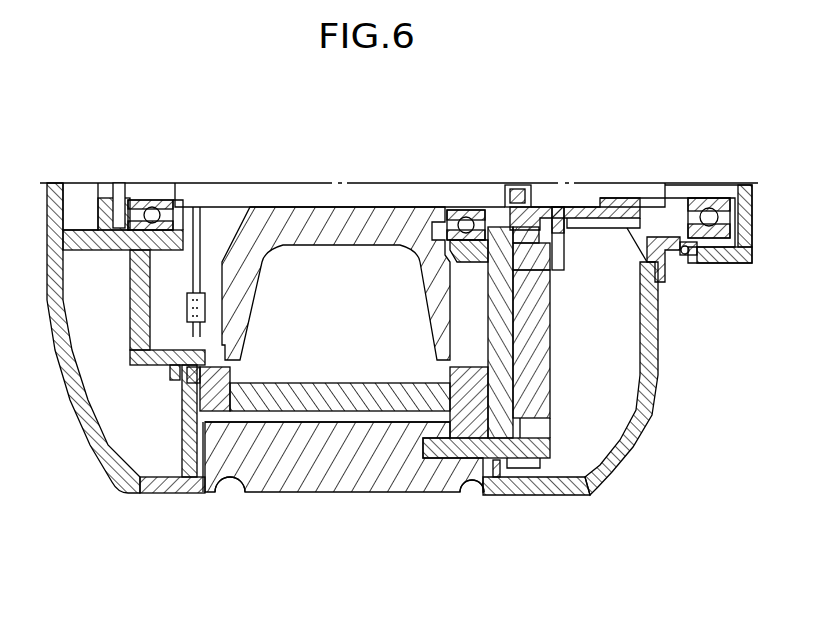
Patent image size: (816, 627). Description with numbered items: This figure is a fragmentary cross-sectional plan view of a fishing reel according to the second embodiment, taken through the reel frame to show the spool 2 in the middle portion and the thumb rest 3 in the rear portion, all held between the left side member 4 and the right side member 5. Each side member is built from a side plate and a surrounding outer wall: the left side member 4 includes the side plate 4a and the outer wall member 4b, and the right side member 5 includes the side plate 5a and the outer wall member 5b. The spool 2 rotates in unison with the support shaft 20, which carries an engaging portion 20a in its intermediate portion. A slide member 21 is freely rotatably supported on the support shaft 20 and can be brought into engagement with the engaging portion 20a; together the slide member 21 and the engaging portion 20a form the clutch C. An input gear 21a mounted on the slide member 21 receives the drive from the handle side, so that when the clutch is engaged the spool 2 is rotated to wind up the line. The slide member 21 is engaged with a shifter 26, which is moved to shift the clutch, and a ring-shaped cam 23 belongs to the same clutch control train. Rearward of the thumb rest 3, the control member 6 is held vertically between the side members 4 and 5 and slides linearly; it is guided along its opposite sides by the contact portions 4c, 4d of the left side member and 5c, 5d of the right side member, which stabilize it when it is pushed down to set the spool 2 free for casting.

The support shaft 20 is at (272, 181).
The engaging portion 20a is at (512, 185).
The slide member 21 is at (542, 183).
The input gear 21a is at (660, 280).
The shifter 26 is at (563, 232).
The ring-shaped cam 23 is at (550, 254).
The clutch C is at (498, 236).
The spool 2 is at (328, 245).
The thumb rest 3 is at (365, 383).
The control member 6 is at (348, 493).
The left side member 4 is at (159, 393).
The left side plate 4a is at (158, 493).
The left outer wall member 4b is at (112, 475).
The contact portion 4c is at (180, 432).
The contact portion 4d is at (243, 515).
The right side member 5 is at (587, 402).
The right side plate 5a is at (512, 497).
The right outer wall member 5b is at (600, 490).
The contact portion 5c is at (480, 416).
The contact portion 5d is at (462, 496).